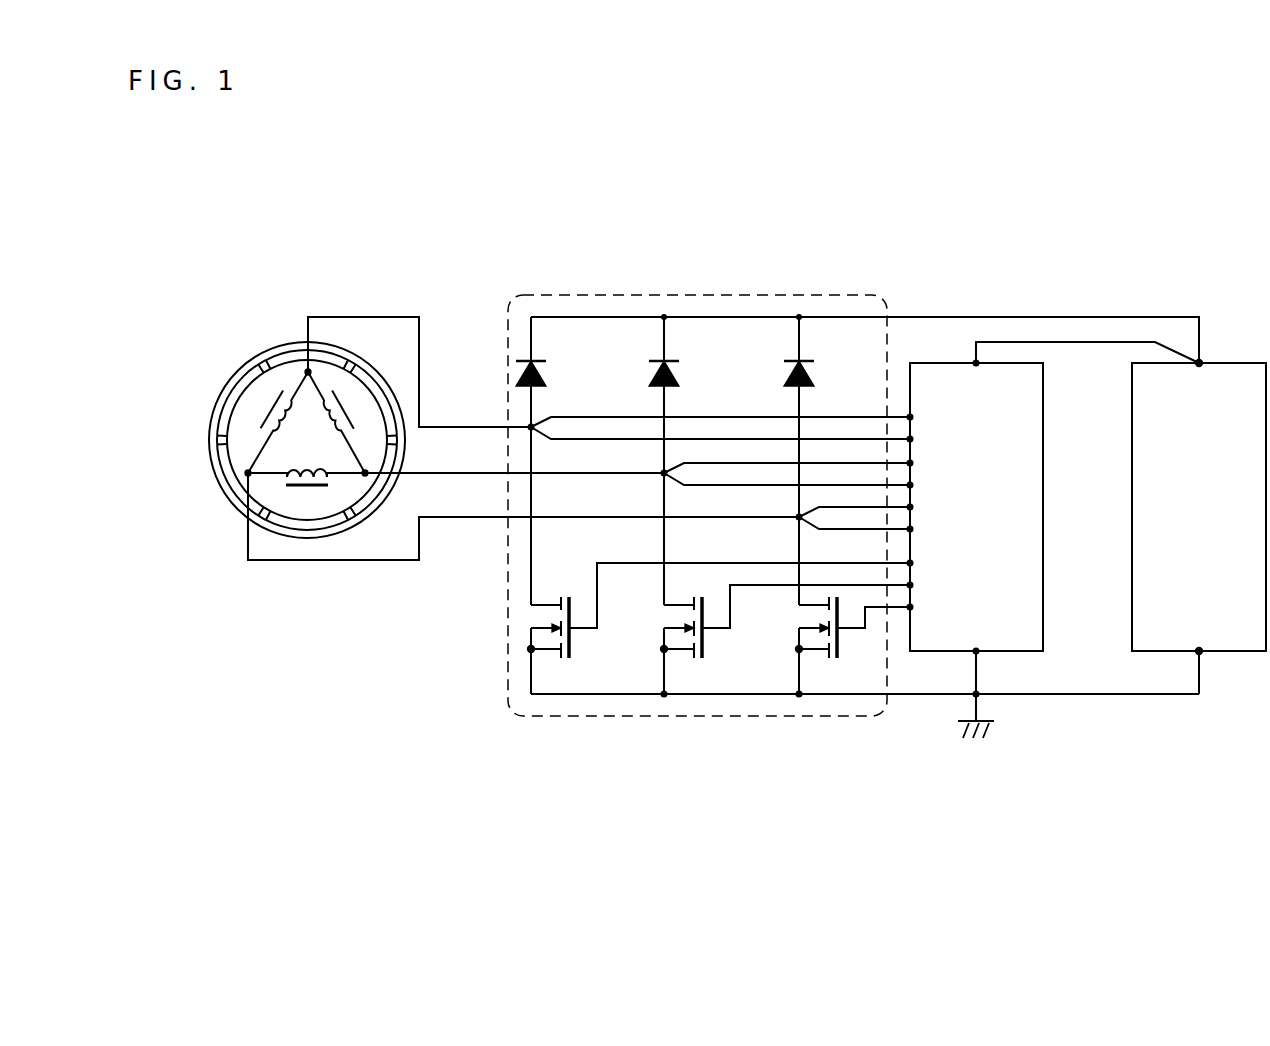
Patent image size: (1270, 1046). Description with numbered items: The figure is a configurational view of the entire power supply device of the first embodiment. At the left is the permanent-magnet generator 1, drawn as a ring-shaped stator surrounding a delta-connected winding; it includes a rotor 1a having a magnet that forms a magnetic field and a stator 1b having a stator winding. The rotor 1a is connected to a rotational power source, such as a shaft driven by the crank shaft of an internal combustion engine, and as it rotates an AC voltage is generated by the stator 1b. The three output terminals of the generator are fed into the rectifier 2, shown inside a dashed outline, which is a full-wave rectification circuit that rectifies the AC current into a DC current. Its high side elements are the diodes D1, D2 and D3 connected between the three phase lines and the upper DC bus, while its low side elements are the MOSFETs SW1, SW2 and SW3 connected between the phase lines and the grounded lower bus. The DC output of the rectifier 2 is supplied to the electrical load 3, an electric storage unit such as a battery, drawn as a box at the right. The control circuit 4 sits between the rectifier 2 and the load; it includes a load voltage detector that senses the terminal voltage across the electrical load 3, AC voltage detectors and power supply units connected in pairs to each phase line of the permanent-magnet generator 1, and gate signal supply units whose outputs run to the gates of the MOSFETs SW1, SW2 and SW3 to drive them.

The permanent-magnet generator 1 is at (359, 279).
The rotor 1a is at (232, 374).
The stator 1b is at (312, 405).
The rectifier 2 is at (620, 293).
The electrical load 3 is at (1231, 379).
The control circuit 4 is at (940, 366).
The diode D1 is at (552, 372).
The diode D2 is at (685, 372).
The diode D3 is at (820, 372).
The MOSFET SW1 is at (583, 645).
The MOSFET SW2 is at (717, 645).
The MOSFET SW3 is at (852, 645).